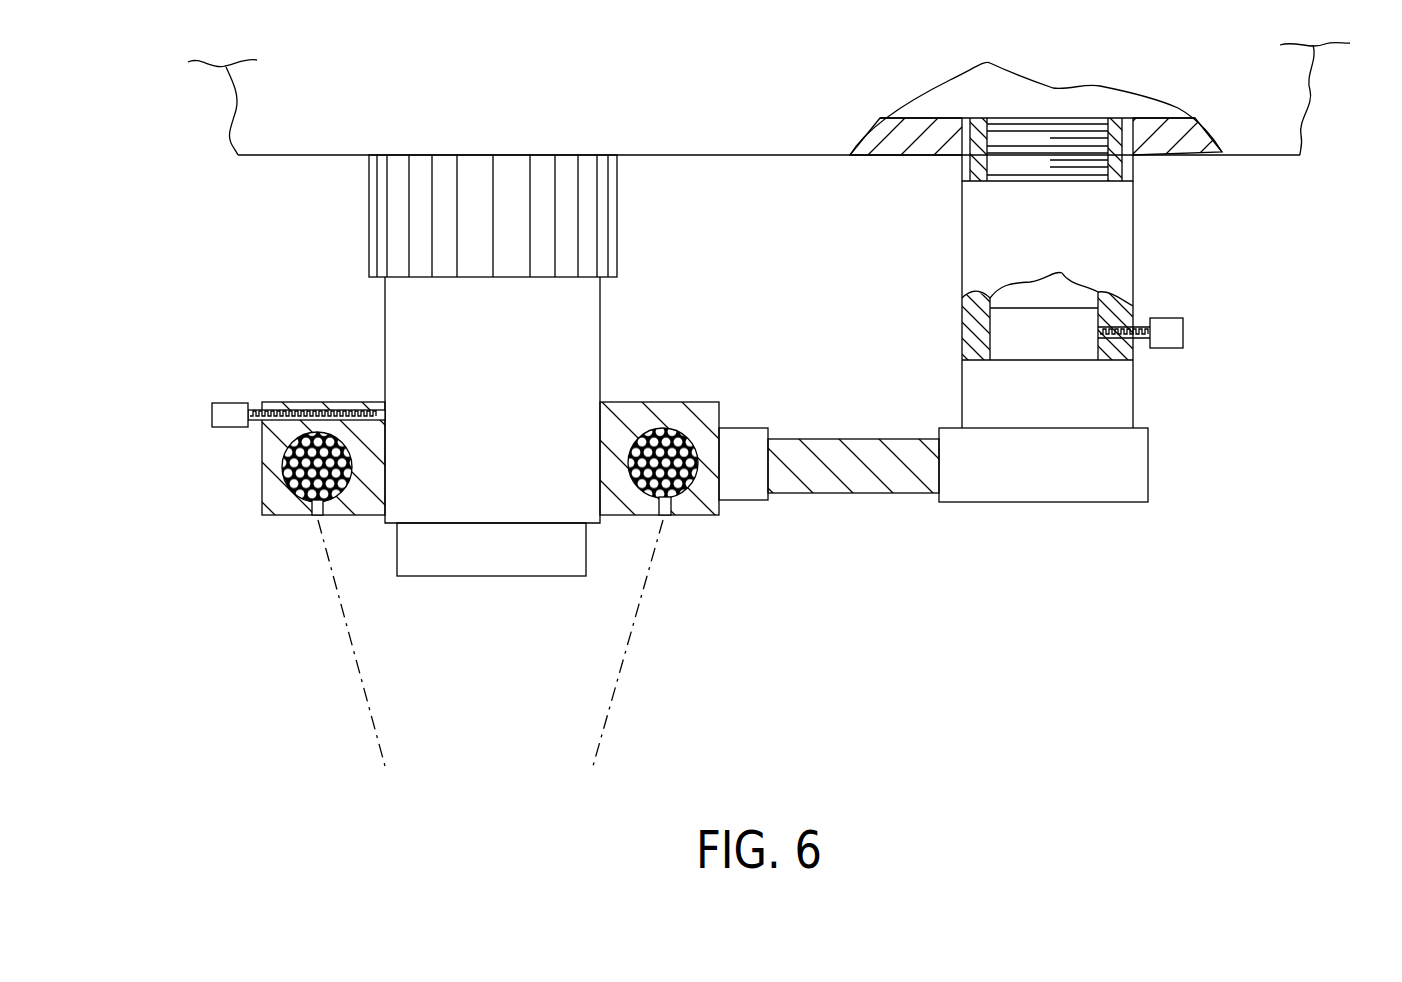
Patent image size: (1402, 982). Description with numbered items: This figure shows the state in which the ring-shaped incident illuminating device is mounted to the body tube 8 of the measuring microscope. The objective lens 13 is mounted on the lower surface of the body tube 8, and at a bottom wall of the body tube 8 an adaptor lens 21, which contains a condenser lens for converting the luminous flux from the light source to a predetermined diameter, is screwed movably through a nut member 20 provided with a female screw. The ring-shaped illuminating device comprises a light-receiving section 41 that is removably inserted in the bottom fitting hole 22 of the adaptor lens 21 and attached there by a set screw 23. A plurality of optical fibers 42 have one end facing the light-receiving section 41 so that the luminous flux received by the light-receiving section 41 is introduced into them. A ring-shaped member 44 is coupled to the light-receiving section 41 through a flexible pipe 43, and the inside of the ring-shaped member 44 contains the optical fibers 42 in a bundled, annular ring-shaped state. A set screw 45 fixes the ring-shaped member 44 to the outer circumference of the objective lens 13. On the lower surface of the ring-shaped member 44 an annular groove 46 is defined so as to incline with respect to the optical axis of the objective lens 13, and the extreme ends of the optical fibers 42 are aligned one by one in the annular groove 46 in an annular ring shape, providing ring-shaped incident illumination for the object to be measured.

The body tube 8 is at (1290, 100).
The objective lens 13 is at (400, 324).
The nut member 20 is at (1132, 172).
The adaptor lens 21 is at (1120, 246).
The bottom fitting hole 22 is at (990, 330).
The set screw 23 is at (1185, 338).
The light-receiving section 41 is at (1123, 402).
The optical fibers 42 is at (672, 432).
The flexible pipe 43 is at (865, 478).
The ring-shaped member 44 is at (707, 515).
The set screw 45 is at (230, 402).
The annular groove 46 is at (675, 510).